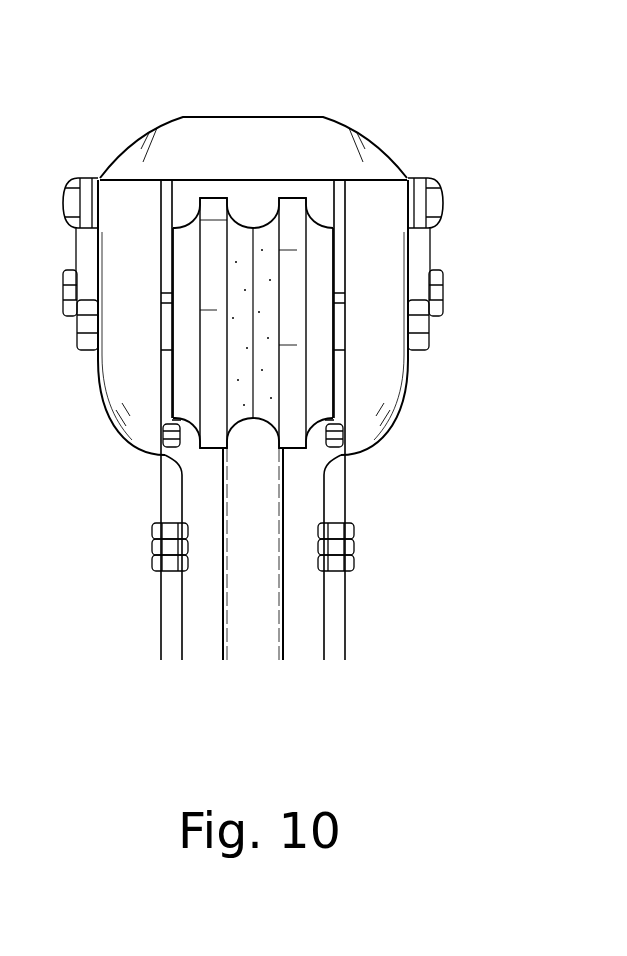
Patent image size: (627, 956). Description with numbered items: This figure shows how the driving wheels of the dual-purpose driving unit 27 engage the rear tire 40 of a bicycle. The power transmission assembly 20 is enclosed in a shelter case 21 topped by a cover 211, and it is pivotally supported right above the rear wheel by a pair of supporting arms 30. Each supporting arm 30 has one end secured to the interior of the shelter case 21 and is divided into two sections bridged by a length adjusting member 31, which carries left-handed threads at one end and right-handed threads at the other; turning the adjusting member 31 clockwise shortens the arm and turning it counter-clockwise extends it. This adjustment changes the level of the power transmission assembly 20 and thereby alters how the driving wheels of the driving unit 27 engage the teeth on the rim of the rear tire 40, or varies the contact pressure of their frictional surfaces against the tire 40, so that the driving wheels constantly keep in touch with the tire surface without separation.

The cover 211 is at (297, 117).
The power transmission assembly 20 is at (407, 383).
The shelter case 21 is at (117, 365).
The dual-purpose driving unit 27 is at (312, 285).
The supporting arms 30 is at (347, 603).
The length adjusting member 31 is at (343, 545).
The rear tire 40 is at (278, 617).